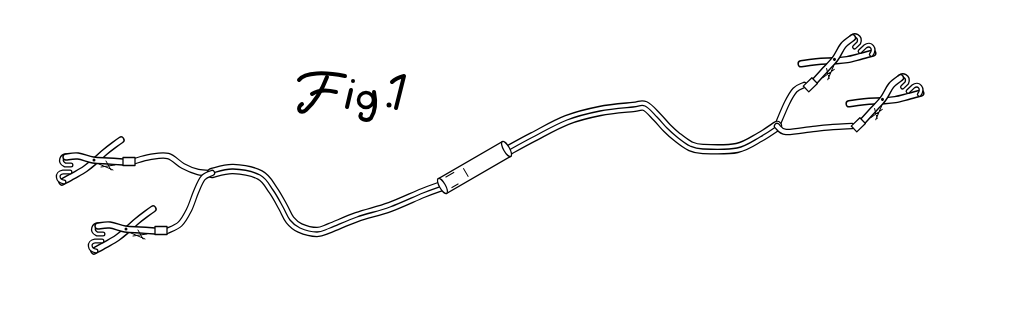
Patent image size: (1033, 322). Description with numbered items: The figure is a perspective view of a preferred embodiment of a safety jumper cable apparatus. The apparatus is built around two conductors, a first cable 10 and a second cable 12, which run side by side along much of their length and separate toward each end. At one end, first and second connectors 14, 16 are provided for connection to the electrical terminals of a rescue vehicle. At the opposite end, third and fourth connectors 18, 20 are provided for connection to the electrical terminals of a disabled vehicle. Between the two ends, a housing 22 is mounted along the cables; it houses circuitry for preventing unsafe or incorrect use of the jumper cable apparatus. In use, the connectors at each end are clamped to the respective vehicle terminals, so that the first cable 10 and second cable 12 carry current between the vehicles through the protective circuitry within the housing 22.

The first cable 10 is at (469, 158).
The second cable 12 is at (516, 187).
The first connector 14 is at (832, 59).
The second connector 16 is at (884, 102).
The third connector 18 is at (96, 145).
The fourth connector 20 is at (127, 260).
The housing 22 is at (468, 162).